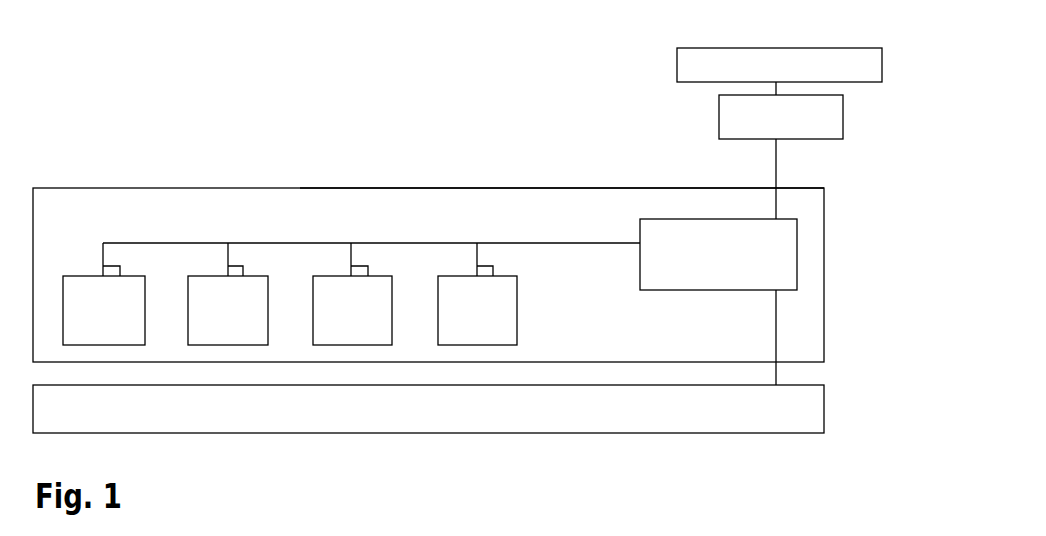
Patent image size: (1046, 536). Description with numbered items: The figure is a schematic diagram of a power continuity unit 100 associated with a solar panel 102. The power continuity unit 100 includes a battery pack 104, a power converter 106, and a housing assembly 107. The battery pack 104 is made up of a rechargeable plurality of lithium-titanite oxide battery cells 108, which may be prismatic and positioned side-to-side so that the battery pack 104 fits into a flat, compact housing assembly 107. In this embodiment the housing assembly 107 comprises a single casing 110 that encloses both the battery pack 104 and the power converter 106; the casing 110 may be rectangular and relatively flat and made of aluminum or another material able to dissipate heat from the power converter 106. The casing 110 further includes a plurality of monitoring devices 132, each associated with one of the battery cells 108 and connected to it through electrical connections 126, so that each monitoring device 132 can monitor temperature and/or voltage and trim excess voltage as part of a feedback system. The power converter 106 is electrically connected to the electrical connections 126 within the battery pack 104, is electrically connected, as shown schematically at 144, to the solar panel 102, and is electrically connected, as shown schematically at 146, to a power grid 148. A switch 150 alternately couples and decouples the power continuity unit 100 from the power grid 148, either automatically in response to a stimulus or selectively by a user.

The power continuity unit 100 is at (366, 136).
The solar panel 102 is at (498, 425).
The battery pack 104 is at (261, 266).
The power converter 106 is at (717, 273).
The housing assembly 107 is at (603, 186).
The battery cells 108 is at (373, 313).
The casing 110 is at (50, 187).
The electrical connections 126 is at (351, 262).
The monitoring devices 132 is at (357, 270).
The electrical connection to alternative energy device 144 is at (776, 374).
The electrical connection to power grid 146 is at (776, 167).
The power grid 148 is at (677, 62).
The switch 150 is at (745, 138).